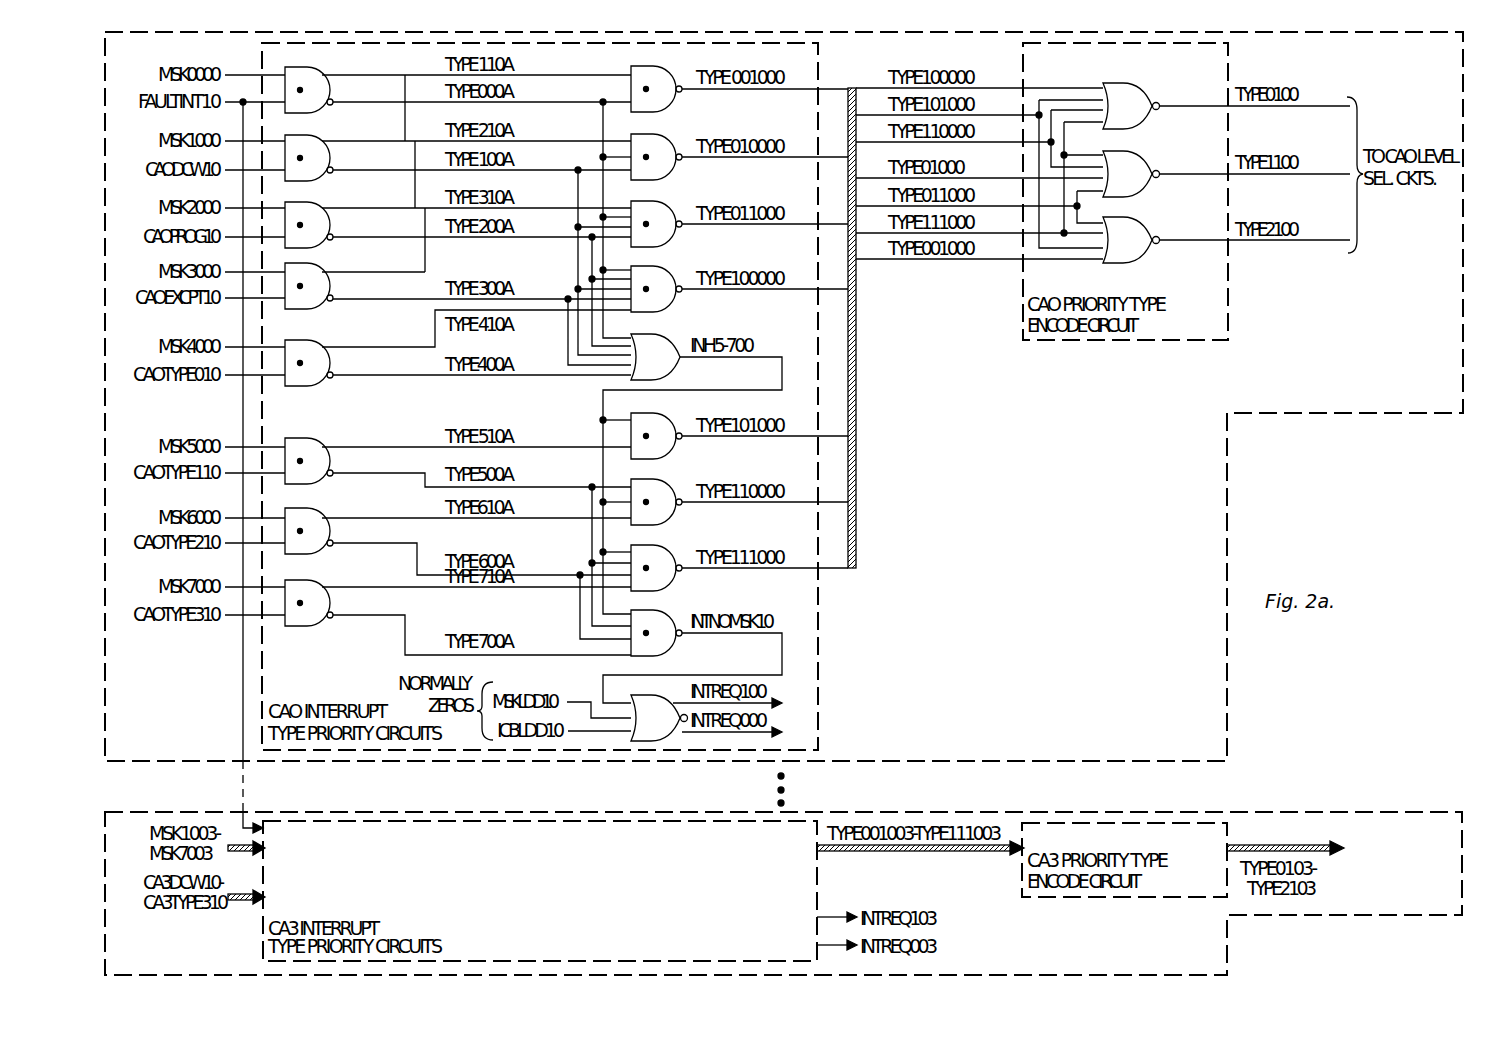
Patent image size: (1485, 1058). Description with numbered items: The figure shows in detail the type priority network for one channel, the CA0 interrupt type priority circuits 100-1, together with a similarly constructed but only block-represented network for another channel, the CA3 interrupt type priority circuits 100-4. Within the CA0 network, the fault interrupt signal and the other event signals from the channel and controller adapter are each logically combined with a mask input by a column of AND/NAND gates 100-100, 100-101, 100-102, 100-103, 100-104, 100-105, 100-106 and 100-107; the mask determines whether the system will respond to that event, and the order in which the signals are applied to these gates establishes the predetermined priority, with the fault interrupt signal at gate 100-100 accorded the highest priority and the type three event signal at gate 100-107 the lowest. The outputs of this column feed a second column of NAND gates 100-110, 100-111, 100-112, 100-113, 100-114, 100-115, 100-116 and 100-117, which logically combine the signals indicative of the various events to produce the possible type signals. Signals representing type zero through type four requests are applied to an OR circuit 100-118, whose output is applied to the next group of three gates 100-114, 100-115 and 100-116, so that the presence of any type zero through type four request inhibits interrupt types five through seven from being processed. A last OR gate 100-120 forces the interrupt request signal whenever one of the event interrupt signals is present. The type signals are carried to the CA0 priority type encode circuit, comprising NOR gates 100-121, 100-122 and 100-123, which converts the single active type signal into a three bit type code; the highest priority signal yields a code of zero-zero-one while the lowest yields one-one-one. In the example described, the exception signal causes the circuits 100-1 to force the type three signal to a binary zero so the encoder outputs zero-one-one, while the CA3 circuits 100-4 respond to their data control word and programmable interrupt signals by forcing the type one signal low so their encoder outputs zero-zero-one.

The CA0 interrupt type priority circuits 100-1 is at (1435, 402).
The CA3 interrupt type priority circuits 100-4 is at (1432, 907).
The AND/NAND gate 100-100 is at (298, 75).
The AND/NAND gate 100-101 is at (298, 143).
The AND/NAND gate 100-102 is at (298, 210).
The AND/NAND gate 100-103 is at (298, 271).
The AND/NAND gate 100-104 is at (298, 348).
The AND/NAND gate 100-105 is at (298, 446).
The AND/NAND gate 100-106 is at (298, 516).
The AND/NAND gate 100-107 is at (298, 588).
The NAND gate 100-110 is at (645, 75).
The NAND gate 100-111 is at (645, 143).
The NAND gate 100-112 is at (645, 210).
The NAND gate 100-113 is at (645, 275).
The NAND gate 100-114 is at (645, 422).
The NAND gate 100-115 is at (645, 488).
The NAND gate 100-116 is at (645, 554).
The NAND gate 100-117 is at (645, 619).
The OR circuit 100-118 is at (645, 343).
The OR gate 100-120 is at (640, 702).
The NOR gate 100-121 is at (1115, 84).
The NOR gate 100-122 is at (1120, 152).
The NOR gate 100-123 is at (1120, 220).